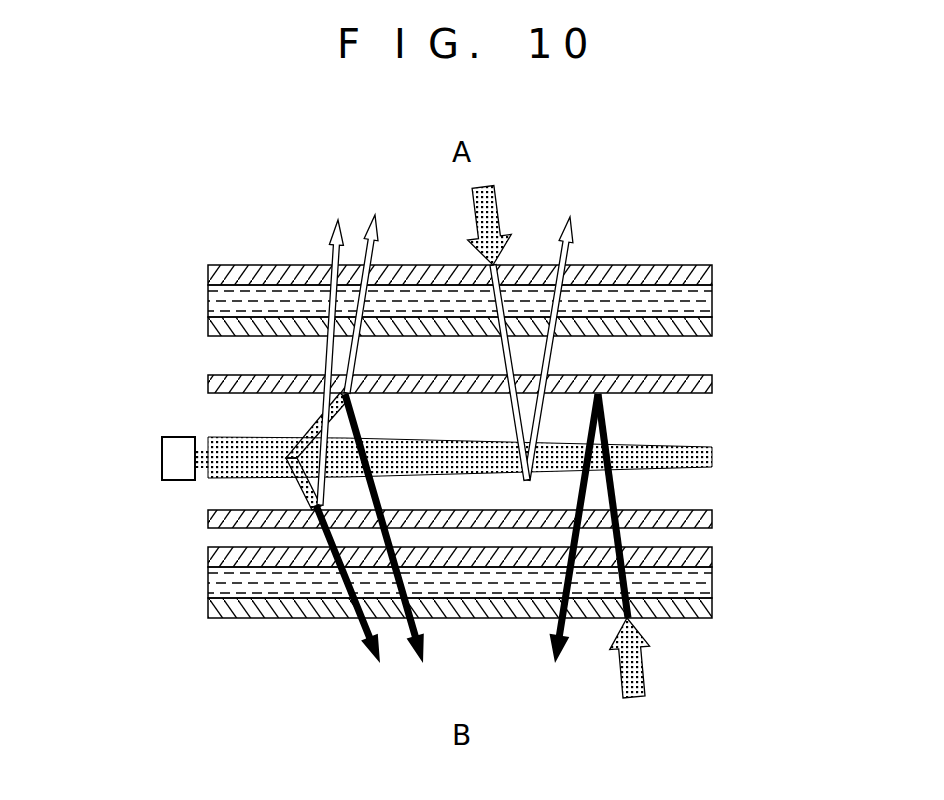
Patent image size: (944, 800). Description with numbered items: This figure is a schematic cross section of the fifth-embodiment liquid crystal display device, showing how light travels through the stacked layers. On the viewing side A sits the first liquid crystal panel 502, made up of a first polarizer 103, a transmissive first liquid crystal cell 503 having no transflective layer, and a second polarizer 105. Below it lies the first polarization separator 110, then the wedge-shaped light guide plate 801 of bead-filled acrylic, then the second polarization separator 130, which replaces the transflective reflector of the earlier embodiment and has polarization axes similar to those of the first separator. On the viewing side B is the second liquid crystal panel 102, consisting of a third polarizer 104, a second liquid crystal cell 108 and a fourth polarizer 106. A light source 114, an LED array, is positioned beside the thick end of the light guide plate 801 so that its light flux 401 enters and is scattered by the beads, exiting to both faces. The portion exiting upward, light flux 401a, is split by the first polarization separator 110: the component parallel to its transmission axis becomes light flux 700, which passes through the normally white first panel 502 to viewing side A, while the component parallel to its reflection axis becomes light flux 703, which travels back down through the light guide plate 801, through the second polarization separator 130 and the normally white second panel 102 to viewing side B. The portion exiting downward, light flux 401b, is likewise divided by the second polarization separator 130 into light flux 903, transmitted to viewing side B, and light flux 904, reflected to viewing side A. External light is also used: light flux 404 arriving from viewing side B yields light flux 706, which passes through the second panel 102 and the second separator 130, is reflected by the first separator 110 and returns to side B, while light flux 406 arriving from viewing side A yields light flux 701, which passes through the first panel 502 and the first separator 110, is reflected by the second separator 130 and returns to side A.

The first liquid crystal panel 502 is at (469, 301).
The first polarizer 103 is at (712, 270).
The first liquid crystal cell 503 is at (712, 300).
The second polarizer 105 is at (712, 330).
The first polarization separator 110 is at (712, 383).
The second polarization separator 130 is at (712, 520).
The second liquid crystal panel 102 is at (469, 582).
The third polarizer 104 is at (712, 558).
The second liquid crystal cell 108 is at (712, 582).
The fourth polarizer 106 is at (712, 607).
The light source 114 is at (167, 457).
The light guide plate 801 is at (712, 457).
The light flux 401 is at (224, 438).
The light flux 401a is at (302, 438).
The light flux 401b is at (303, 497).
The light flux 904 is at (330, 250).
The light flux 700 is at (370, 245).
The light flux 701 is at (576, 250).
The light flux 406 is at (500, 195).
The light flux 404 is at (648, 680).
The light flux 903 is at (402, 642).
The light flux 703 is at (372, 630).
The light flux 706 is at (546, 630).